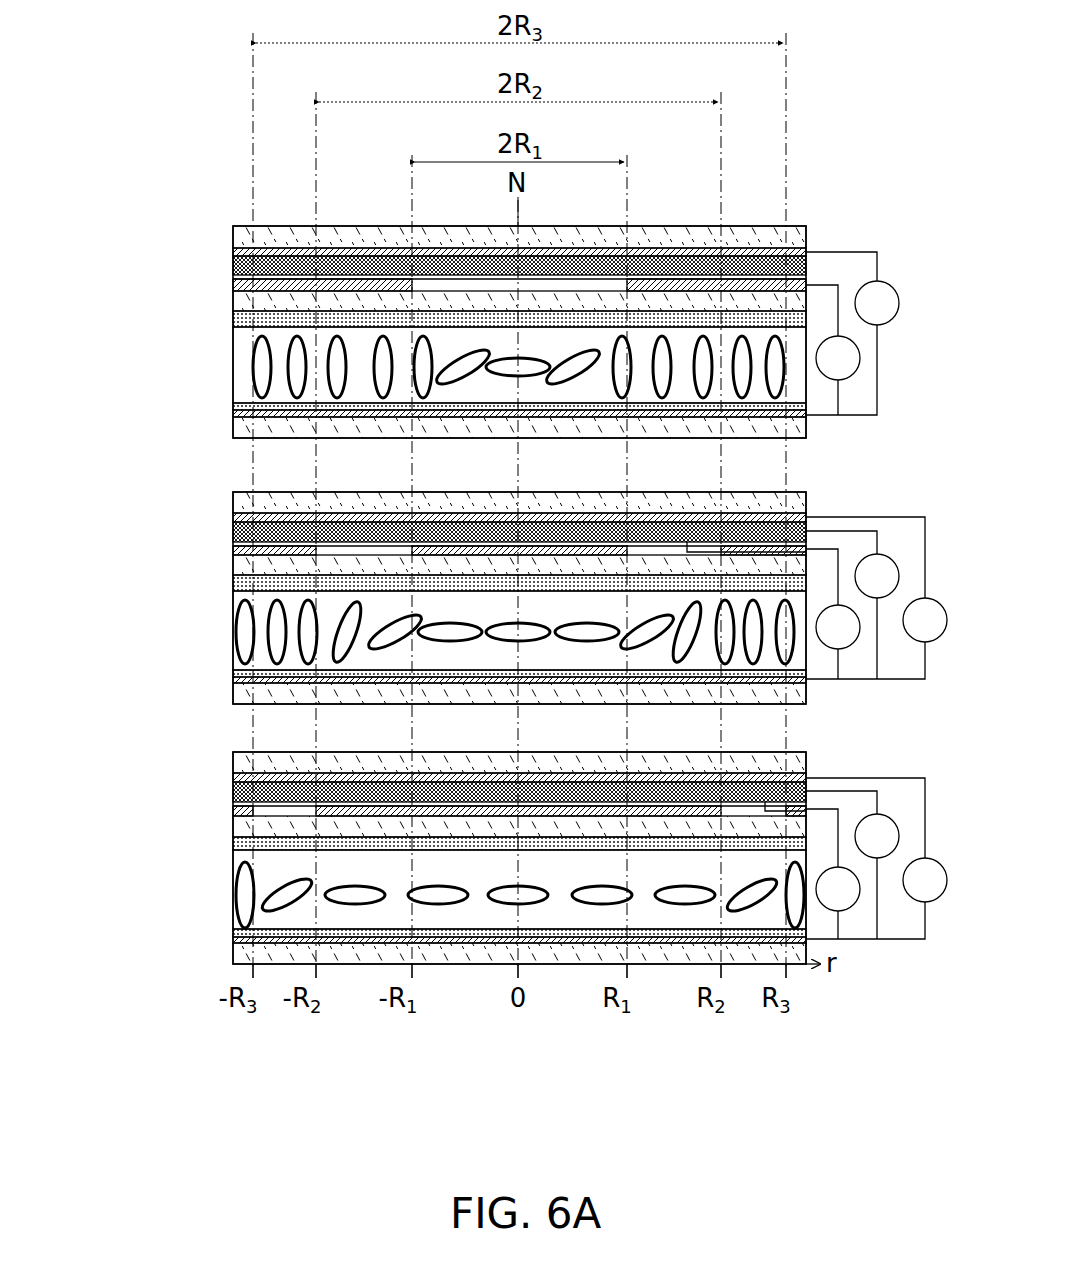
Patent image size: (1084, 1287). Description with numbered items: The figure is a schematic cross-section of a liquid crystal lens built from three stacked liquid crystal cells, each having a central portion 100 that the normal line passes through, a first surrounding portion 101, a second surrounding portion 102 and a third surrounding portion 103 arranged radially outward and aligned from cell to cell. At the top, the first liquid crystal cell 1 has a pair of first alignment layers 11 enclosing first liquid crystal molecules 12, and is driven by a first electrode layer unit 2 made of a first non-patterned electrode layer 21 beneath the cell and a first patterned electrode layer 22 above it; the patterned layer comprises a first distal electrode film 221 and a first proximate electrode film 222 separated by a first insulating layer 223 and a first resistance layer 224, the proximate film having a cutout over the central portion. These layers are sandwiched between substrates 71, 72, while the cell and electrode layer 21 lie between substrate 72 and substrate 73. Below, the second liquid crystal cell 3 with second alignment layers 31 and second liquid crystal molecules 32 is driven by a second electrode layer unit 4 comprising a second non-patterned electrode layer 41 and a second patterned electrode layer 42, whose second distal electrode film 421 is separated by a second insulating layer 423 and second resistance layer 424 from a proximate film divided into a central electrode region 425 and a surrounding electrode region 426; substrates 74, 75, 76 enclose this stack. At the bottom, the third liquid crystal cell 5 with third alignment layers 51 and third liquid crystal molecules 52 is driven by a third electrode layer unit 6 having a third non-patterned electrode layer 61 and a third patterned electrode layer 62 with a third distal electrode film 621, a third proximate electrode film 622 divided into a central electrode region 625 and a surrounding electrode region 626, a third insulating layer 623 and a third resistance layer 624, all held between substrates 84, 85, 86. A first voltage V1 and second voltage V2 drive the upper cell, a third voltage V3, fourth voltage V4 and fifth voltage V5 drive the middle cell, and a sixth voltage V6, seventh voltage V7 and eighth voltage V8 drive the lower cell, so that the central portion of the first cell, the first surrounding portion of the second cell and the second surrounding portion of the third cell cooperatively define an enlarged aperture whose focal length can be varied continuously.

The first liquid crystal cell 1 is at (497, 362).
The first electrode layer unit 2 is at (460, 197).
The first patterned electrode layer 22 is at (460, 197).
The first distal electrode film 221 is at (233, 252).
The first proximate electrode film 222 is at (233, 287).
The first insulating layer 223 is at (233, 263).
The first resistance layer 224 is at (233, 279).
The first alignment layers 11 is at (233, 319).
The first liquid crystal molecules 12 is at (228, 362).
The first non-patterned electrode layer 21 is at (233, 414).
The substrate 71 is at (806, 232).
The substrate 72 is at (364, 302).
The substrate 73 is at (806, 430).
The second liquid crystal cell 3 is at (497, 632).
The second electrode layer unit 4 is at (430, 490).
The second patterned electrode layer 42 is at (430, 490).
The second distal electrode film 421 is at (233, 517).
The second insulating layer 423 is at (233, 528).
The second resistance layer 424 is at (233, 541).
The central electrode region 425 is at (466, 548).
The surrounding electrode region 426 is at (475, 507).
The second alignment layers 31 is at (233, 583).
The second liquid crystal molecules 32 is at (228, 632).
The second non-patterned electrode layer 41 is at (233, 680).
The substrate 74 is at (660, 504).
The substrate 75 is at (233, 565).
The substrate 76 is at (806, 694).
The third liquid crystal cell 5 is at (435, 951).
The third electrode layer unit 6 is at (509, 773).
The third patterned electrode layer 62 is at (509, 773).
The third distal electrode film 621 is at (233, 777).
The third proximate electrode film 622 is at (443, 773).
The third insulating layer 623 is at (233, 790).
The third resistance layer 624 is at (233, 805).
The central electrode region 625 is at (463, 808).
The surrounding electrode region 626 is at (443, 773).
The third alignment layers 51 is at (233, 845).
The third liquid crystal molecules 52 is at (228, 895).
The third non-patterned electrode layer 61 is at (233, 942).
The substrate 84 is at (806, 760).
The substrate 85 is at (676, 830).
The substrate 86 is at (467, 950).
The central portion 100 is at (561, 322).
The first surrounding portion 101 is at (670, 322).
The second surrounding portion 102 is at (753, 322).
The third surrounding portion 103 is at (810, 318).
The first voltage V1 is at (833, 350).
The second voltage V2 is at (852, 333).
The third voltage V3 is at (833, 614).
The fourth voltage V4 is at (852, 605).
The fifth voltage V5 is at (876, 598).
The sixth voltage V6 is at (833, 874).
The seventh voltage V7 is at (852, 865).
The eighth voltage V8 is at (876, 858).